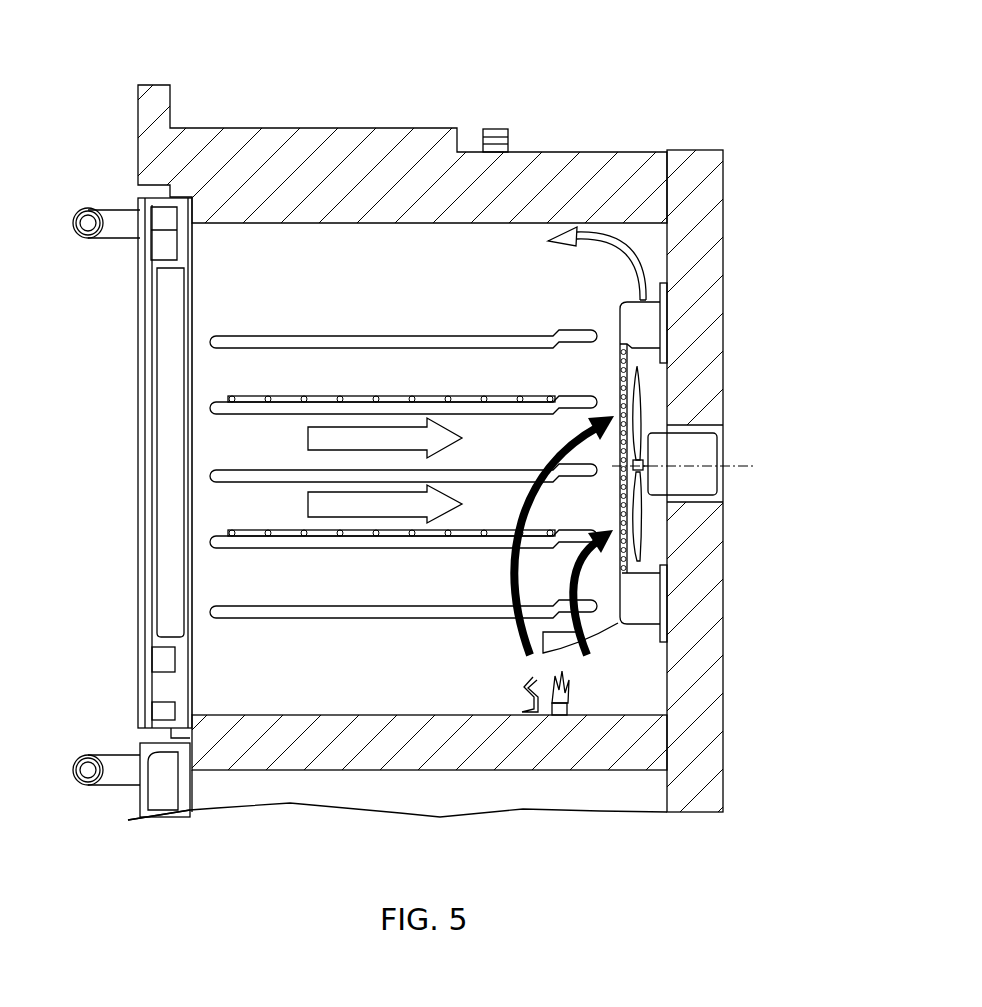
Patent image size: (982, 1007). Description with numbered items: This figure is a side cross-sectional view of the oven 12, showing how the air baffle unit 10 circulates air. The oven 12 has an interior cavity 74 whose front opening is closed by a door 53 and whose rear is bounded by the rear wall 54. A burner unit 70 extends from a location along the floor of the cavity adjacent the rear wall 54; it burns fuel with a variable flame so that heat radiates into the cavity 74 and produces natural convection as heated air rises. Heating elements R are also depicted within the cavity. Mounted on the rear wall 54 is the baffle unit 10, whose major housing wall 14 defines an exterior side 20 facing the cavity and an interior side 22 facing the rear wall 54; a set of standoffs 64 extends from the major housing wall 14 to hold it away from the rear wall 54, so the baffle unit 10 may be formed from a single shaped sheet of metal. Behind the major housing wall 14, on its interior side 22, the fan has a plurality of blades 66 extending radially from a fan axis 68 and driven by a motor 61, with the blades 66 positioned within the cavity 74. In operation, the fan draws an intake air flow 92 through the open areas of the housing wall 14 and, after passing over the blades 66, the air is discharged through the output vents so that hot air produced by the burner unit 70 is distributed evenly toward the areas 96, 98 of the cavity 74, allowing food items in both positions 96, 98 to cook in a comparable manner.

The oven 12 is at (567, 88).
The rear wall 54 is at (675, 253).
The air baffle unit 10 is at (632, 636).
The door 53 is at (165, 475).
The interior cavity 74 is at (228, 291).
The heating elements R is at (286, 395).
The area 98 is at (379, 290).
The area 96 is at (262, 503).
The intake air flow 92 is at (373, 442).
The major housing wall 14 is at (612, 318).
The exterior side 20 is at (613, 373).
The interior side 22 is at (636, 366).
The blades 66 is at (640, 408).
The motor 61 is at (700, 442).
The fan axis 68 is at (733, 469).
The standoffs 64 is at (675, 630).
The burner unit 70 is at (520, 700).